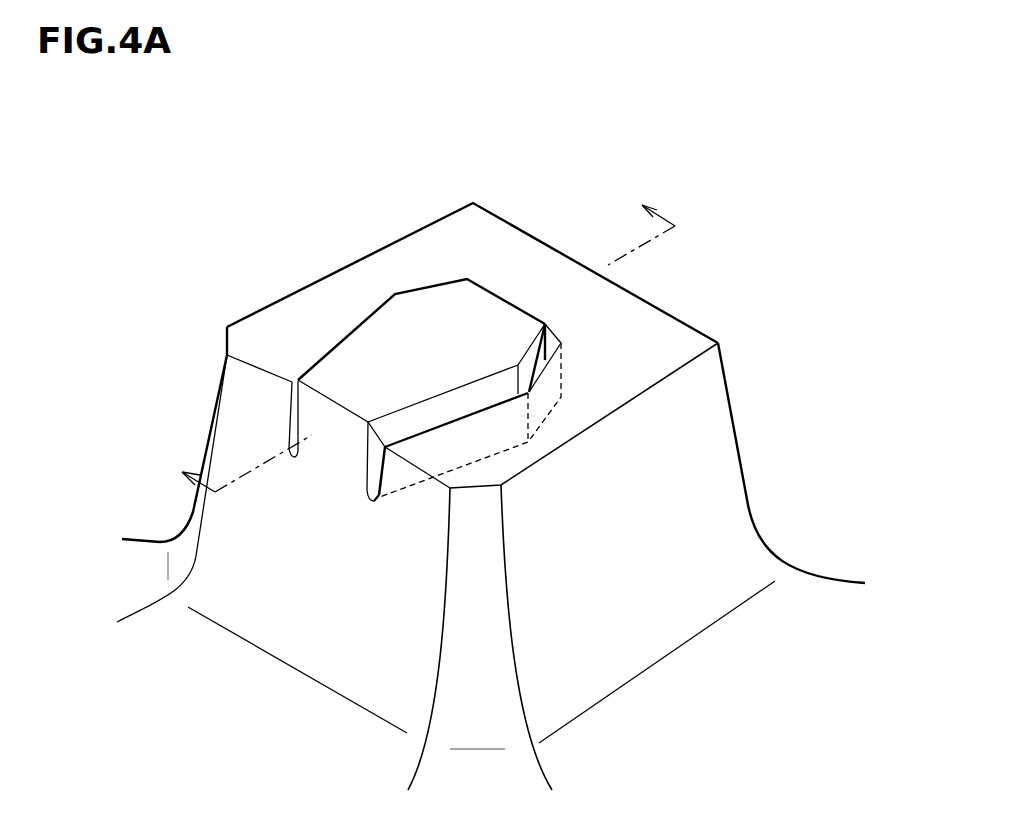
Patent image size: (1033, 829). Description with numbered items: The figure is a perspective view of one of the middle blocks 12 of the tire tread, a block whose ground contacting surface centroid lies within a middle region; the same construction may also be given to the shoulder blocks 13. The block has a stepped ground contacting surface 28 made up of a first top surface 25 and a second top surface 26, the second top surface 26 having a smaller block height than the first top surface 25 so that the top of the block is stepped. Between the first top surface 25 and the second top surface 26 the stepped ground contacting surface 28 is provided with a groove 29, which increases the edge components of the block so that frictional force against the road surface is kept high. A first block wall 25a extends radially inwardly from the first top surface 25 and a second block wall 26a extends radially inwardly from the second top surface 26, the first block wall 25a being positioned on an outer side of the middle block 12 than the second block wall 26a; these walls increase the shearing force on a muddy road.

The middle block 12 is at (491, 487).
The shoulder block 13 is at (327, 312).
The stepped ground contacting surface 28 is at (544, 301).
The first top surface 25 is at (438, 343).
The second top surface 26 is at (583, 324).
The groove 29 is at (535, 371).
The first block wall 25a is at (333, 445).
The second block wall 26a is at (422, 503).